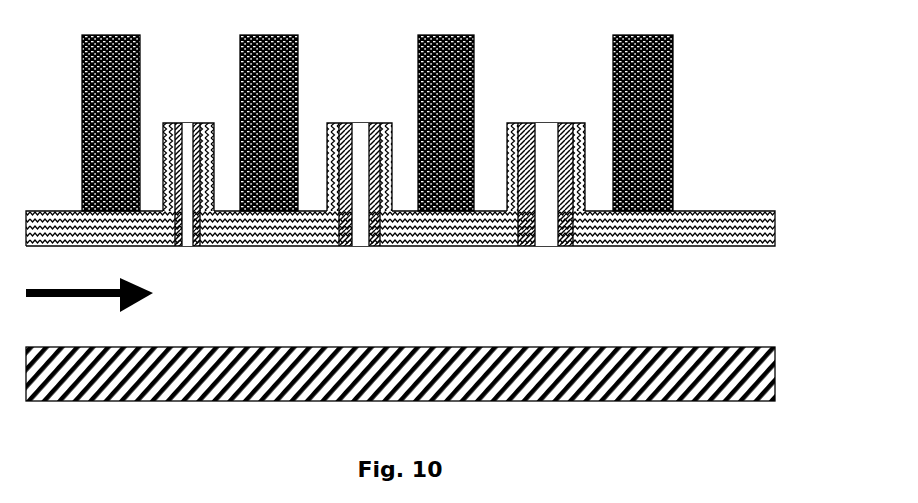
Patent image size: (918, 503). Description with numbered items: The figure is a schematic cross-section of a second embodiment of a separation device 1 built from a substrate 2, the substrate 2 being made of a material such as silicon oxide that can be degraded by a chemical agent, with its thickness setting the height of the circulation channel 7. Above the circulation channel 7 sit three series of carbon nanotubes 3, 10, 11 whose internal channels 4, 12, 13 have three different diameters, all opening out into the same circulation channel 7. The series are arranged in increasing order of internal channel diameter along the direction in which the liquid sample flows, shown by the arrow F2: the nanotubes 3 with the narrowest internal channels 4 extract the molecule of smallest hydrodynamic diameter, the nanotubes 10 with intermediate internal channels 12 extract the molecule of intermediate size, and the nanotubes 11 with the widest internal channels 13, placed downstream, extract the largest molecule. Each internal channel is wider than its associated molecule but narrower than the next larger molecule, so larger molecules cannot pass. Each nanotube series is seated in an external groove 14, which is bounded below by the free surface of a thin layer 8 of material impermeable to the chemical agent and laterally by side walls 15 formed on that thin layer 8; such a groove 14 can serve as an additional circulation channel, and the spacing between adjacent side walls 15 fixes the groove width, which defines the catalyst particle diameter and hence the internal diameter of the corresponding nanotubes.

The separation device 1 is at (734, 103).
The substrate 2 is at (186, 388).
The carbon nanotubes 3 is at (163, 192).
The internal channels 4 is at (187, 130).
The circulation channel 7 is at (746, 312).
The thin layer 8 is at (716, 231).
The carbon nanotubes 10 is at (327, 187).
The carbon nanotubes 11 is at (507, 187).
The internal channels 12 is at (359, 136).
The internal channels 13 is at (548, 140).
The external groove 14 is at (198, 74).
The side walls 15 is at (139, 35).
The arrow F2 is at (98, 298).